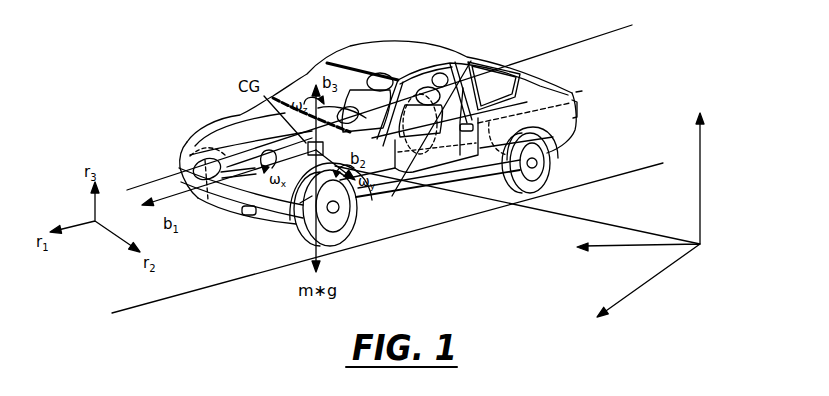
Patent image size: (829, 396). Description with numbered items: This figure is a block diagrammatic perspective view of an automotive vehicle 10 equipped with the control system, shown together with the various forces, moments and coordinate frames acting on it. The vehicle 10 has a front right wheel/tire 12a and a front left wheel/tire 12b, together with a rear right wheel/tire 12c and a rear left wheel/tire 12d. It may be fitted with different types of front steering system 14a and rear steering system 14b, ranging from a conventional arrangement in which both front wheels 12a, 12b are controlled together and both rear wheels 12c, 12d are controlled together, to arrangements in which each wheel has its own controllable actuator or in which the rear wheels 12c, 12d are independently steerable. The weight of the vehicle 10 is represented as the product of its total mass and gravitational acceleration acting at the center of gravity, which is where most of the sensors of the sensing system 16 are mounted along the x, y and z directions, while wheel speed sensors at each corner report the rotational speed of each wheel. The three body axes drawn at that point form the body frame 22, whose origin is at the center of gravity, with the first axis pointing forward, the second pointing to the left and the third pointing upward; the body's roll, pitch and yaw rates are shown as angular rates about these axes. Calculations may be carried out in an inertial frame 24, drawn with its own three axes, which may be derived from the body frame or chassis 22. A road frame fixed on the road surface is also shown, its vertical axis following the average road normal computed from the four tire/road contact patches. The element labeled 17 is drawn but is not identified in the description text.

The automotive vehicle 10 is at (387, 55).
The front right wheel/tire 12a is at (184, 136).
The front left wheel/tire 12b is at (357, 222).
The rear right wheel/tire 12c is at (430, 88).
The rear left wheel/tire 12d is at (548, 176).
The front steering system 14a is at (305, 200).
The rear steering system 14b is at (582, 91).
The sensing system 16 is at (325, 143).
The vehicle body 17 is at (471, 61).
The body frame 22 is at (162, 202).
The inertial frame 24 is at (702, 246).